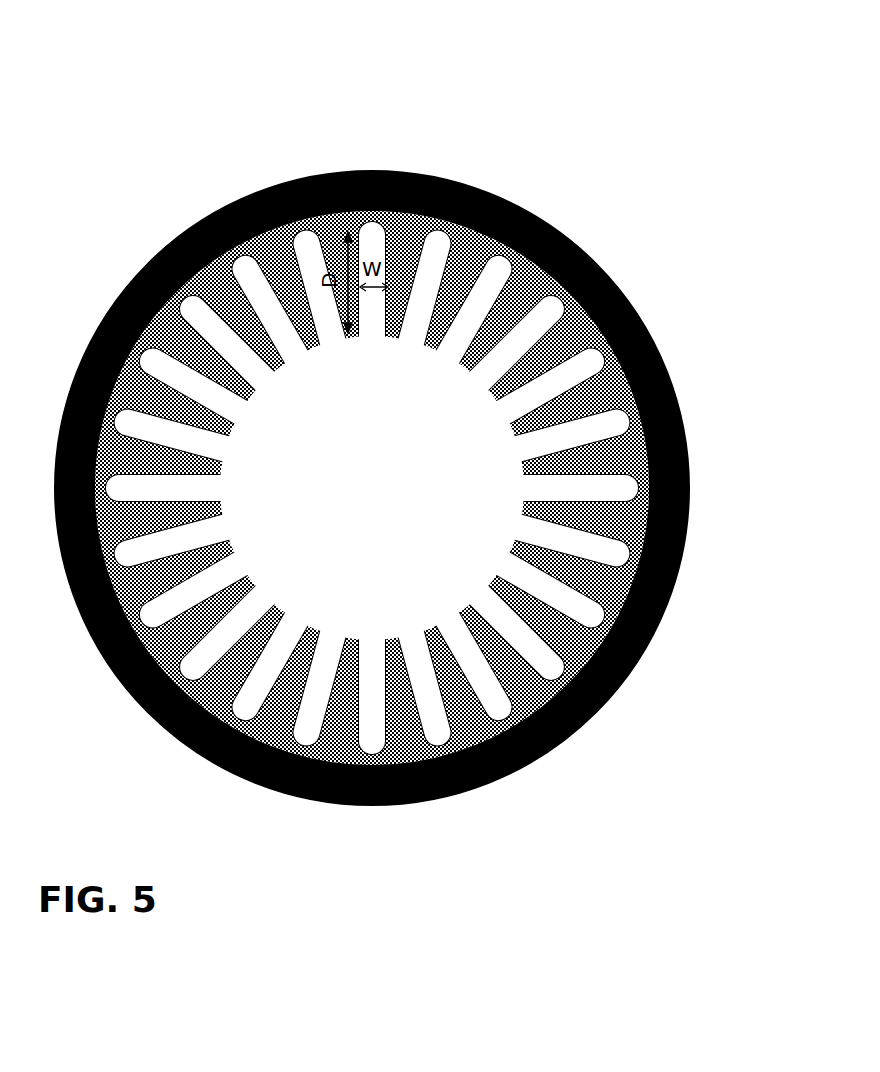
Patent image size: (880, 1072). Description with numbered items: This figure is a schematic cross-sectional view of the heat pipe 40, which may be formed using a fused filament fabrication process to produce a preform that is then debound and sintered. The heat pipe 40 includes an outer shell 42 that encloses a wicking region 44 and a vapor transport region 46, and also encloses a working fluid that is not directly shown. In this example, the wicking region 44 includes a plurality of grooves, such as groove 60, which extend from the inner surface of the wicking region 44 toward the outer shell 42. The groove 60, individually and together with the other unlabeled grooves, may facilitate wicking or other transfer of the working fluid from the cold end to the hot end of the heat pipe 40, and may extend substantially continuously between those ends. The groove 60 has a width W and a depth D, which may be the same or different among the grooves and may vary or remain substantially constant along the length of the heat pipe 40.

The heat pipe 40 is at (429, 404).
The outer shell 42 is at (586, 257).
The wicking region 44 is at (183, 317).
The vapor transport region 46 is at (388, 501).
The groove 60 is at (380, 338).